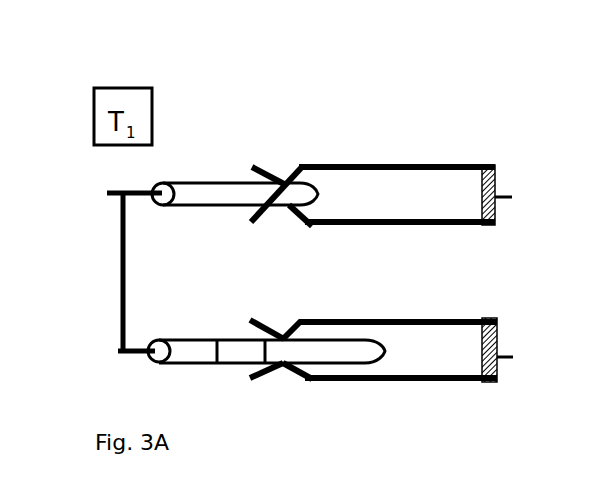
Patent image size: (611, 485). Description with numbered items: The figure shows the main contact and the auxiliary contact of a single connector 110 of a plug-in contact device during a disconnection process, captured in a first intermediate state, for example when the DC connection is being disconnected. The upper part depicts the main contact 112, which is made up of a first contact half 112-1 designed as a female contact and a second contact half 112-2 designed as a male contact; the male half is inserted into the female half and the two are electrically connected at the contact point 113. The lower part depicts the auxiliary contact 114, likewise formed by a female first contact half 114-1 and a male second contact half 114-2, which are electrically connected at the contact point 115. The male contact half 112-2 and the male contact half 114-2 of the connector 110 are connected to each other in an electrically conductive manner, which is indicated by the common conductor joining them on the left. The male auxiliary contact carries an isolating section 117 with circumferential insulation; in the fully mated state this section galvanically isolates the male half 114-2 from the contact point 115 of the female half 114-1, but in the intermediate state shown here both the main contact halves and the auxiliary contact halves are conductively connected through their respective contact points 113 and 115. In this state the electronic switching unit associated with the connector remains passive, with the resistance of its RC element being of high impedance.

The connector 110 is at (98, 269).
The main contact 112 is at (350, 164).
The first contact half 112-1 is at (455, 163).
The second contact half 112-2 is at (208, 210).
The contact point 113 is at (280, 177).
The auxiliary contact 114 is at (354, 371).
The first contact half 114-1 is at (465, 382).
The second contact half 114-2 is at (318, 337).
The contact point 115 is at (282, 370).
The isolating section 117 is at (232, 338).